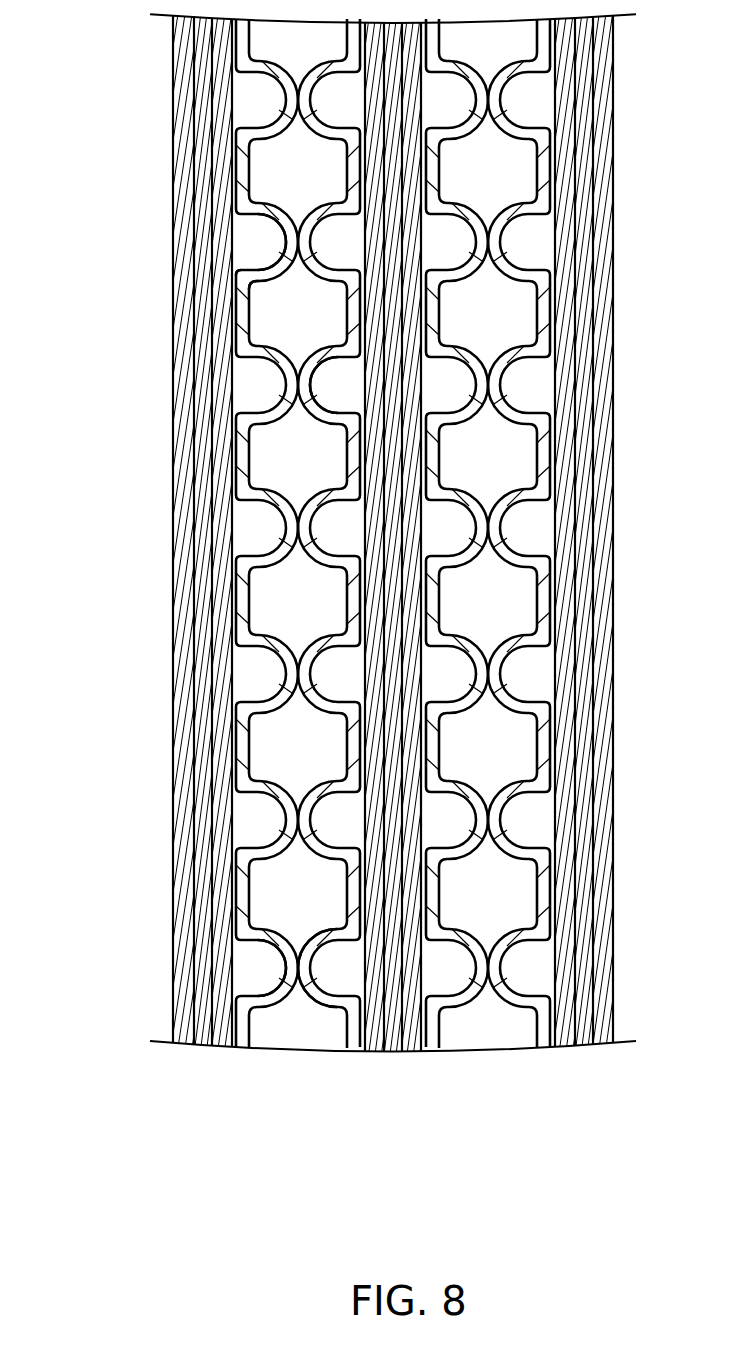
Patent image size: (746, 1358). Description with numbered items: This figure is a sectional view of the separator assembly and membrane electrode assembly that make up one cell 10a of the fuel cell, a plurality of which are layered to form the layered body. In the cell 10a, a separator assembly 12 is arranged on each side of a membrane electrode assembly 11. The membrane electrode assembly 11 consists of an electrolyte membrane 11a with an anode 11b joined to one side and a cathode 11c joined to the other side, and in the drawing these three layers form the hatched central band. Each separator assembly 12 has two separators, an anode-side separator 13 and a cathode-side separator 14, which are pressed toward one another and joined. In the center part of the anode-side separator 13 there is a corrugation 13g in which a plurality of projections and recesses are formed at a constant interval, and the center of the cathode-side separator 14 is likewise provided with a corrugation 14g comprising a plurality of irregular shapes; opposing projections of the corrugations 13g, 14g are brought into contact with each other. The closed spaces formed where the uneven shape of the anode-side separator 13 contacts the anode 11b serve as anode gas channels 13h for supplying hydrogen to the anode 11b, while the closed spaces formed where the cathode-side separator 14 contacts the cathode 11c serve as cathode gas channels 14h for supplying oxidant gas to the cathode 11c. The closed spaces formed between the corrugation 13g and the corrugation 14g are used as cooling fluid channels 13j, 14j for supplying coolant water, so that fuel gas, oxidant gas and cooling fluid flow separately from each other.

The cell 10a is at (260, 1190).
The membrane electrode assembly 11 is at (403, 597).
The electrolyte membrane 11a is at (393, 1030).
The anode 11b is at (373, 1030).
The cathode 11c is at (412, 1030).
The separator assembly 12 is at (504, 1164).
The anode-side separator 13 is at (527, 1012).
The cathode-side separator 14 is at (458, 1010).
The corrugation 13g is at (303, 992).
The corrugation 14g is at (282, 972).
The anode gas channel 13h is at (357, 393).
The cathode gas channel 14h is at (253, 233).
The cooling fluid channel 13j is at (335, 313).
The cooling fluid channel 14j is at (161, 222).